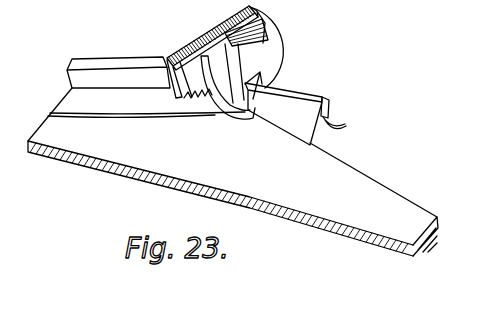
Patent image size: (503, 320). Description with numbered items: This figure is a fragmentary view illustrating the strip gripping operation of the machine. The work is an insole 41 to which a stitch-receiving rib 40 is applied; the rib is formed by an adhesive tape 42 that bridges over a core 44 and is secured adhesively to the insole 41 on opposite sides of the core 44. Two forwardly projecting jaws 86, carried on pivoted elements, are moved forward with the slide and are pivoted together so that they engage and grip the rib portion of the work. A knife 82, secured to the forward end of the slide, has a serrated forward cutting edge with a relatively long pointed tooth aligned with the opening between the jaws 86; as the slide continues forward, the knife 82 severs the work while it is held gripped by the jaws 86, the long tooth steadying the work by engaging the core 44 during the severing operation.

The stitch-receiving rib 40 is at (99, 65).
The insole 41 is at (378, 196).
The adhesive tape 42 is at (338, 122).
The core 44 is at (328, 100).
The knife 82 is at (205, 37).
The jaws 86 is at (273, 53).